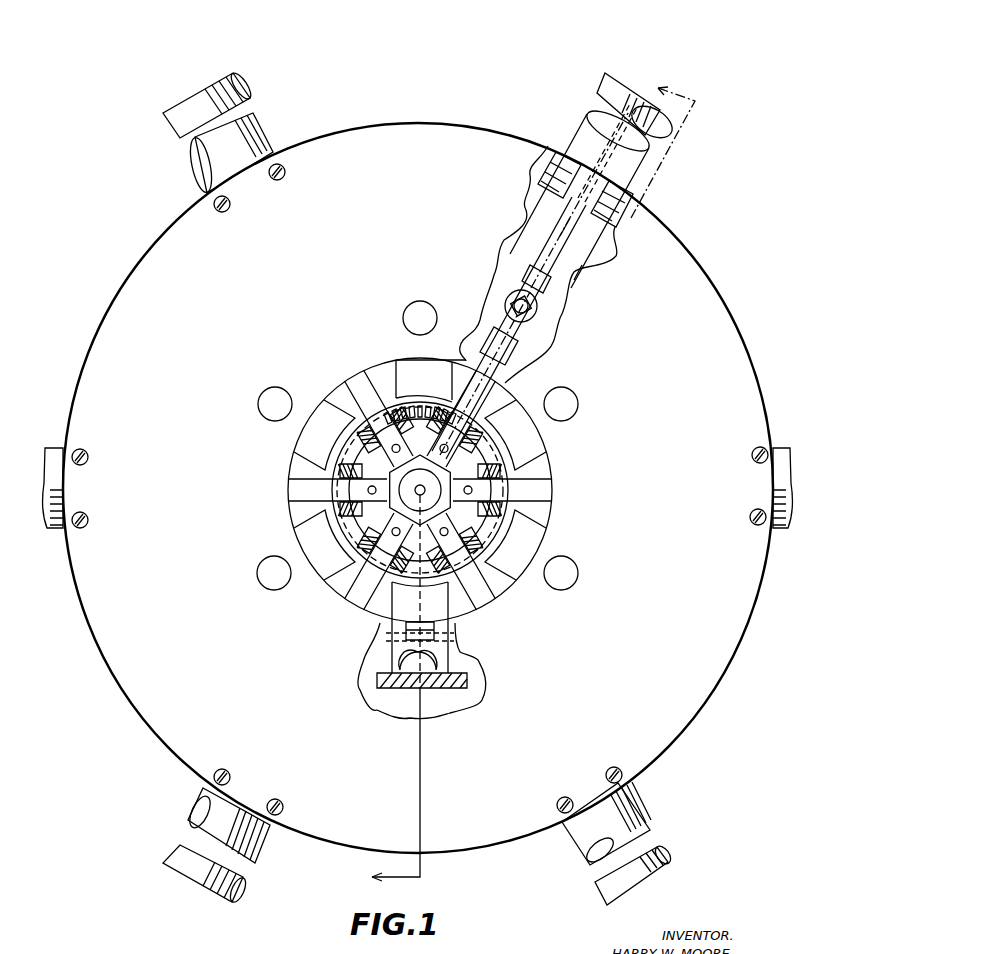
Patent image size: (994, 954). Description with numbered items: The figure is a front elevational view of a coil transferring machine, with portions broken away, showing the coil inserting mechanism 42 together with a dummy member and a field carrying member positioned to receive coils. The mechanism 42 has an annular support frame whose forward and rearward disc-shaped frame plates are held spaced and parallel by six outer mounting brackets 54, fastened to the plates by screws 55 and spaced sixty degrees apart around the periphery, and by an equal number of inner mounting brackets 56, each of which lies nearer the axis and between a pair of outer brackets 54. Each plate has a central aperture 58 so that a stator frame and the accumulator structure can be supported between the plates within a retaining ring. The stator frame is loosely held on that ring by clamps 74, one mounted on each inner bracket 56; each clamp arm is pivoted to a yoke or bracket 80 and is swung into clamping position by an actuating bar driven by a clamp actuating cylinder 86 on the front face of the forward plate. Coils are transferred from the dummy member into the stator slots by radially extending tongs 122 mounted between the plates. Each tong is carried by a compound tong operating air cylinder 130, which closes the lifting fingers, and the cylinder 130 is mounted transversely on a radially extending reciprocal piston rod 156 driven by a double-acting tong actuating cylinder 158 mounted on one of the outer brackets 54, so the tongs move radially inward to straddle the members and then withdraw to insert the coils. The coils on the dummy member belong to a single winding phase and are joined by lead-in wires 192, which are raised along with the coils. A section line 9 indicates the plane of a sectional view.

The coil inserting mechanism 42 is at (353, 122).
The outer mounting brackets 54 is at (548, 162).
The screws 55 is at (213, 203).
The inner mounting brackets 56 is at (418, 689).
The central aperture 58 is at (344, 392).
The clamps 74 is at (302, 446).
The yoke or bracket 80 is at (462, 657).
The clamp actuating cylinder 86 is at (417, 302).
The tongs 122 is at (480, 306).
The tong operating air cylinder 130 is at (516, 295).
The piston rod 156 is at (596, 248).
The tong actuating cylinder 158 is at (268, 128).
The lead-in wires 192 is at (430, 410).
The section line 9 is at (540, 489).